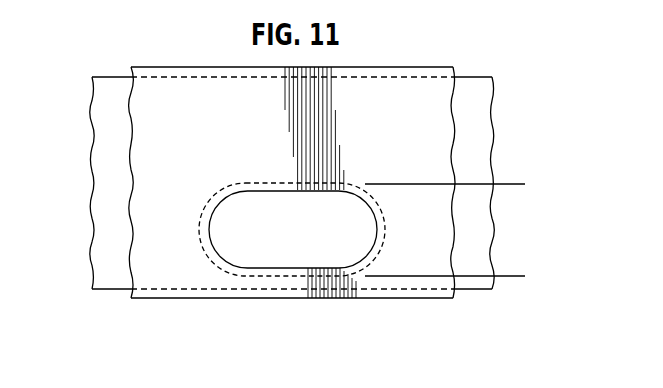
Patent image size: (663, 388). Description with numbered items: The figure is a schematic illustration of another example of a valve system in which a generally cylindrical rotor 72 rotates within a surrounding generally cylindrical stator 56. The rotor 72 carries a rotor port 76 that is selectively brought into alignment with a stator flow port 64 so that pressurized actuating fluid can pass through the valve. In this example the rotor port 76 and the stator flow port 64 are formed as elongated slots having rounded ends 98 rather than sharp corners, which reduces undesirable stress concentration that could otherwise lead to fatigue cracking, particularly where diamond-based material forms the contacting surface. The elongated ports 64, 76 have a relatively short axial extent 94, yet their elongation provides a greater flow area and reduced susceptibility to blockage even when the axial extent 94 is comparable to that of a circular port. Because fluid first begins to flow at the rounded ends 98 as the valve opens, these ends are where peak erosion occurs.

The stator 56 is at (130, 155).
The rotor 72 is at (91, 242).
The rotor port 76 is at (277, 184).
The rounded end 98 is at (211, 196).
The stator flow port 64 is at (293, 267).
The axial extent 94 is at (517, 184).